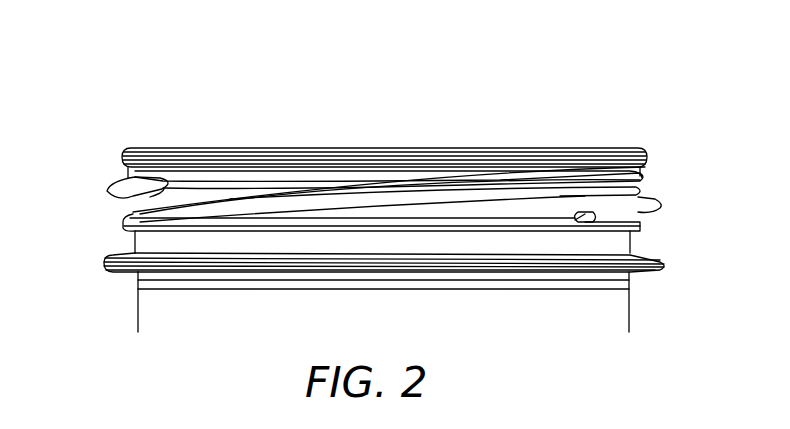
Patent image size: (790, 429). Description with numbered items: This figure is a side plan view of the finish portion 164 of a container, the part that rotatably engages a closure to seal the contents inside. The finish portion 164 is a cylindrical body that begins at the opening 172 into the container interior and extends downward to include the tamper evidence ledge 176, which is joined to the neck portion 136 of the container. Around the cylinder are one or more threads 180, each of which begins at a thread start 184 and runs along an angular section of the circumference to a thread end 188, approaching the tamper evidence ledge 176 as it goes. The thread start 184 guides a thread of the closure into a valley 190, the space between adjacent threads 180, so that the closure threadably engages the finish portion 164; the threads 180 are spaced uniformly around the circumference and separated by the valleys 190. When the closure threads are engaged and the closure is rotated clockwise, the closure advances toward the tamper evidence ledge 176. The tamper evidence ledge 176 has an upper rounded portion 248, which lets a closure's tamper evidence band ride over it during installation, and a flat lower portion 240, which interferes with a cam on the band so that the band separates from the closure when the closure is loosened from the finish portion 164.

The finish portion 164 is at (660, 80).
The opening 172 is at (377, 141).
The thread start 184 is at (222, 148).
The thread end 188 is at (575, 212).
The threads 180 is at (110, 195).
The valley 190 is at (643, 197).
The upper rounded portion 248 is at (108, 262).
The tamper evidence ledge 176 is at (668, 266).
The flat lower portion 240 is at (114, 273).
The neck portion 136 is at (629, 302).